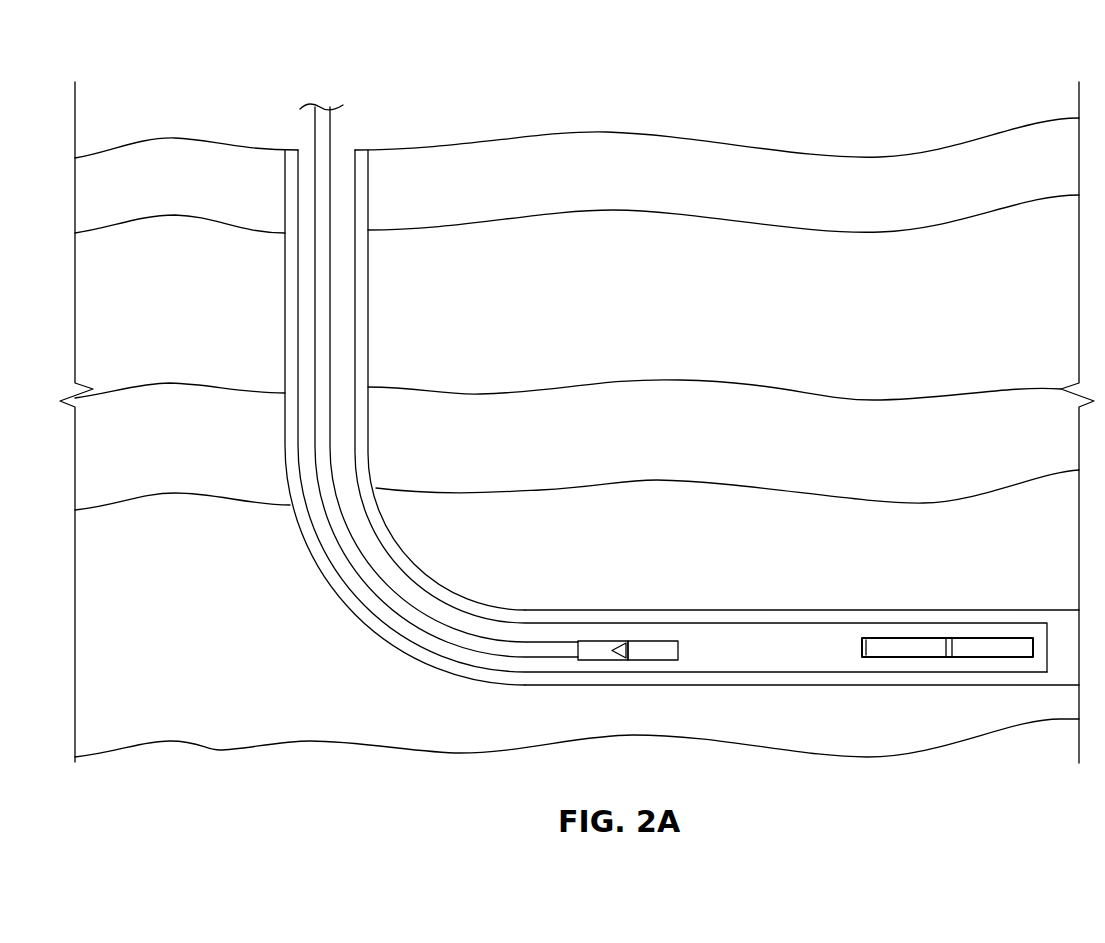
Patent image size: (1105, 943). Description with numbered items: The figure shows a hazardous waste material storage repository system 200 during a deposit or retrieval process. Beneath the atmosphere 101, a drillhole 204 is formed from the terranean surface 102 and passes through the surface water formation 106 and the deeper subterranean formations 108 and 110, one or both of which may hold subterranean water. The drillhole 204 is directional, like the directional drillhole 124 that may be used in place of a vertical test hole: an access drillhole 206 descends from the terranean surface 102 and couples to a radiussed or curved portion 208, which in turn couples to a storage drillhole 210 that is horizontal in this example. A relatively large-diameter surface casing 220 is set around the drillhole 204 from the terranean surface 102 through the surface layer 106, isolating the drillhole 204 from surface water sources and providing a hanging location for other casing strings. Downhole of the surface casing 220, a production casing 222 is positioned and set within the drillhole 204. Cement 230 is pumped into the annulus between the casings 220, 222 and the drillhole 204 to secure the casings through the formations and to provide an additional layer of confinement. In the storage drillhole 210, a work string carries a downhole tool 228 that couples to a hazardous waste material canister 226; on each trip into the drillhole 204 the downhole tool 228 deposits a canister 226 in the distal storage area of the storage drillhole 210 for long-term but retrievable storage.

The hazardous waste material storage repository system 200 is at (770, 42).
The atmosphere 101 is at (506, 85).
The terranean surface 102 is at (770, 143).
The surface water formation 106 is at (794, 197).
The subterranean formation 108 is at (677, 437).
The subterranean formation 110 is at (662, 529).
The surface casing 220 is at (285, 208).
The curved portion 208 is at (325, 578).
The production casing 222 is at (308, 520).
The access drillhole 206 is at (370, 276).
The cement 230 is at (762, 610).
The directional drillhole 124 is at (348, 498).
The drillhole 204 is at (465, 572).
The downhole tool 228 is at (593, 641).
The hazardous waste material canister 226 is at (645, 648).
The storage drillhole 210 is at (870, 609).